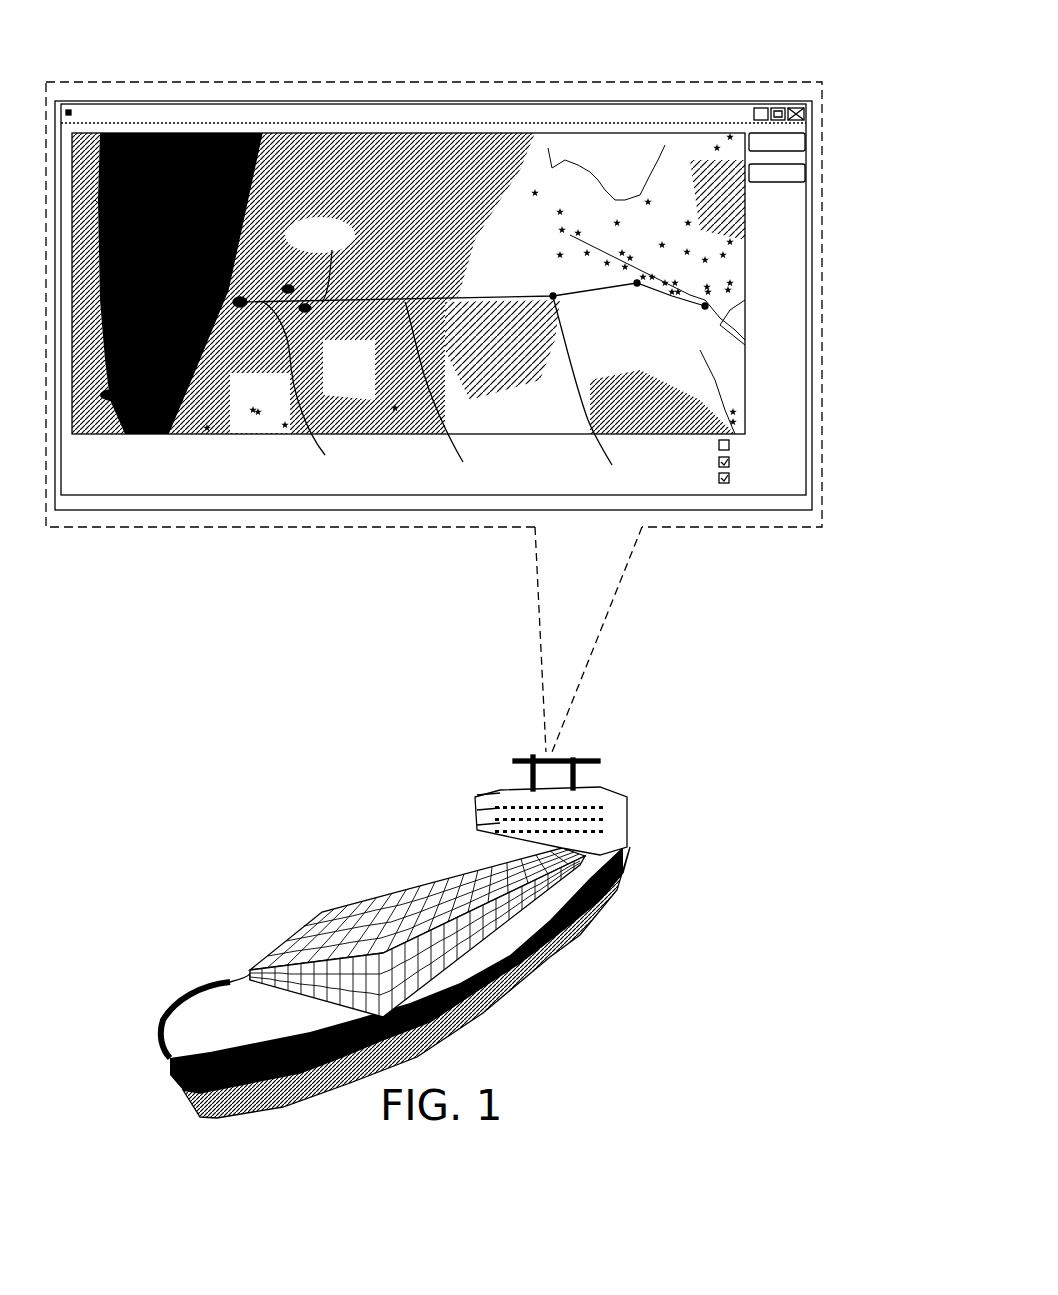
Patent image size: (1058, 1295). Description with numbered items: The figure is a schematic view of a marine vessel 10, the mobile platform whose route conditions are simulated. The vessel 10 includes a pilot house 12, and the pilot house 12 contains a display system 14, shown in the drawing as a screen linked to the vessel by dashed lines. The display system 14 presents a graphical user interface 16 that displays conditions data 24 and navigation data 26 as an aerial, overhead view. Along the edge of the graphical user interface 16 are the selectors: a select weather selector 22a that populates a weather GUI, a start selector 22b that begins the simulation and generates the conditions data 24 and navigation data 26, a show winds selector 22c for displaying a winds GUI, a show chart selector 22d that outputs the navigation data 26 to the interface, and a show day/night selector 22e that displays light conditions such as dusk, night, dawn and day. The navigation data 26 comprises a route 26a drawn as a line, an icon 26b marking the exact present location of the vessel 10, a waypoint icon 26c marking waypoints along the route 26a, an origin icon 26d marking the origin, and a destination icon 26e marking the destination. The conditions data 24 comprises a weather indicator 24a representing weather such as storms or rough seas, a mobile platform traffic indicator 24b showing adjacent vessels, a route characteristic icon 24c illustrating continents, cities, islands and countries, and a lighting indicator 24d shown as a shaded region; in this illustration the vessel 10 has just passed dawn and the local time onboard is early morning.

The marine vessel 10 is at (270, 1103).
The pilot house 12 is at (607, 770).
The display system 14 is at (260, 500).
The graphical user interface 16 is at (339, 495).
The select weather selector 22a is at (801, 139).
The start selector 22b is at (797, 172).
The show winds selector 22c is at (770, 446).
The show chart selector 22d is at (778, 461).
The show day/night selector 22e is at (793, 481).
The conditions data 24 is at (133, 433).
The weather indicator 24a is at (694, 420).
The mobile platform traffic indicator 24b is at (290, 289).
The route characteristic icon 24c is at (607, 136).
The lighting indicator 24d is at (315, 134).
The navigation data 26 is at (526, 299).
The route 26a is at (457, 297).
The icon 26b is at (240, 308).
The waypoint icon 26c is at (455, 393).
The origin icon 26d is at (262, 133).
The destination icon 26e is at (708, 305).